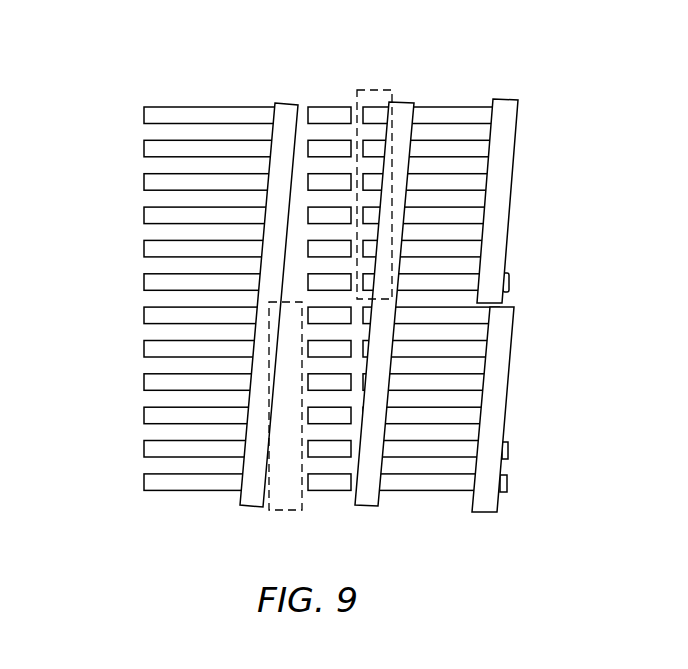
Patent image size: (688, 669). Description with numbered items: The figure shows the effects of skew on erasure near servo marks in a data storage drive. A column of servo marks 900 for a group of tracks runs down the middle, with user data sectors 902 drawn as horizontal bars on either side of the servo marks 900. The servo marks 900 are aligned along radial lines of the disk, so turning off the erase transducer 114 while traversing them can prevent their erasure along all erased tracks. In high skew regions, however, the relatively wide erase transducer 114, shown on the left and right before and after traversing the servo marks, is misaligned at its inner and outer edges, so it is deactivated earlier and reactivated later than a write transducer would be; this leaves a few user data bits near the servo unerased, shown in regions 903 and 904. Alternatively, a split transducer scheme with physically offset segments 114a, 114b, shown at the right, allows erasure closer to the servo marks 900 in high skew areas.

The servo marks 900 is at (327, 97).
The user data sectors 902 is at (234, 100).
The region of unerased user data bits 903 is at (387, 90).
The region of unerased user data bits 904 is at (302, 512).
The erase transducer 114 is at (251, 503).
The erase transducer segment 114a is at (502, 263).
The erase transducer segment 114b is at (490, 387).